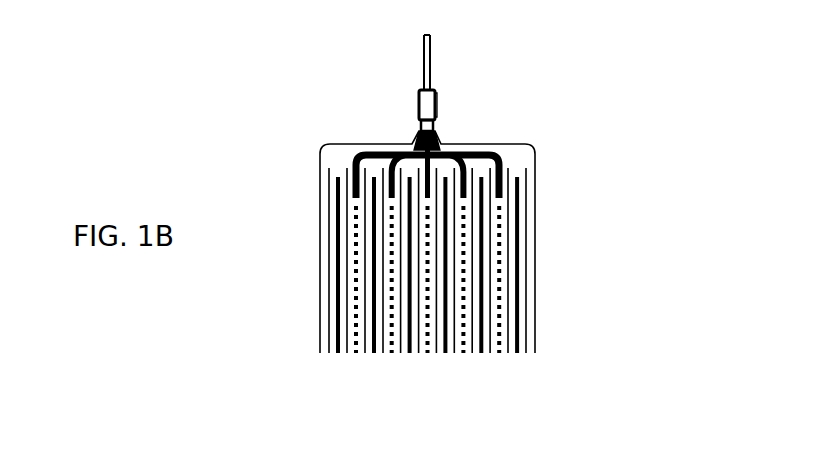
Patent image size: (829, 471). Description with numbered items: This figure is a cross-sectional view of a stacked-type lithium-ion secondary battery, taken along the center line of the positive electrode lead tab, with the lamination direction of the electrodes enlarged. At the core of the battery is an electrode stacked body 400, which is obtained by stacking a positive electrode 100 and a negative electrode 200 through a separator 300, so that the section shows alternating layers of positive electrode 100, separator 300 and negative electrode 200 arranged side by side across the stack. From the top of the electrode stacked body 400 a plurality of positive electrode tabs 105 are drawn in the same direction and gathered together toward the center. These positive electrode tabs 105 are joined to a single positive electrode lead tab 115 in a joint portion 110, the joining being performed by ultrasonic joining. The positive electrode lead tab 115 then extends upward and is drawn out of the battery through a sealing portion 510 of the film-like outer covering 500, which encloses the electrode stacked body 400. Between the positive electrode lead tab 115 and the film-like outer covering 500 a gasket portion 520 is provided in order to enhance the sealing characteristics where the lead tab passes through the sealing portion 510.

The positive electrode 100 is at (496, 318).
The positive electrode tabs 105 is at (463, 152).
The joint portion 110 is at (419, 131).
The positive electrode lead tab 115 is at (423, 63).
The negative electrode 200 is at (481, 282).
The separator 300 is at (493, 232).
The electrode stacked body 400 is at (475, 372).
The film-like outer covering 500 is at (523, 144).
The sealing portion 510 is at (417, 107).
The gasket portion 520 is at (437, 90).